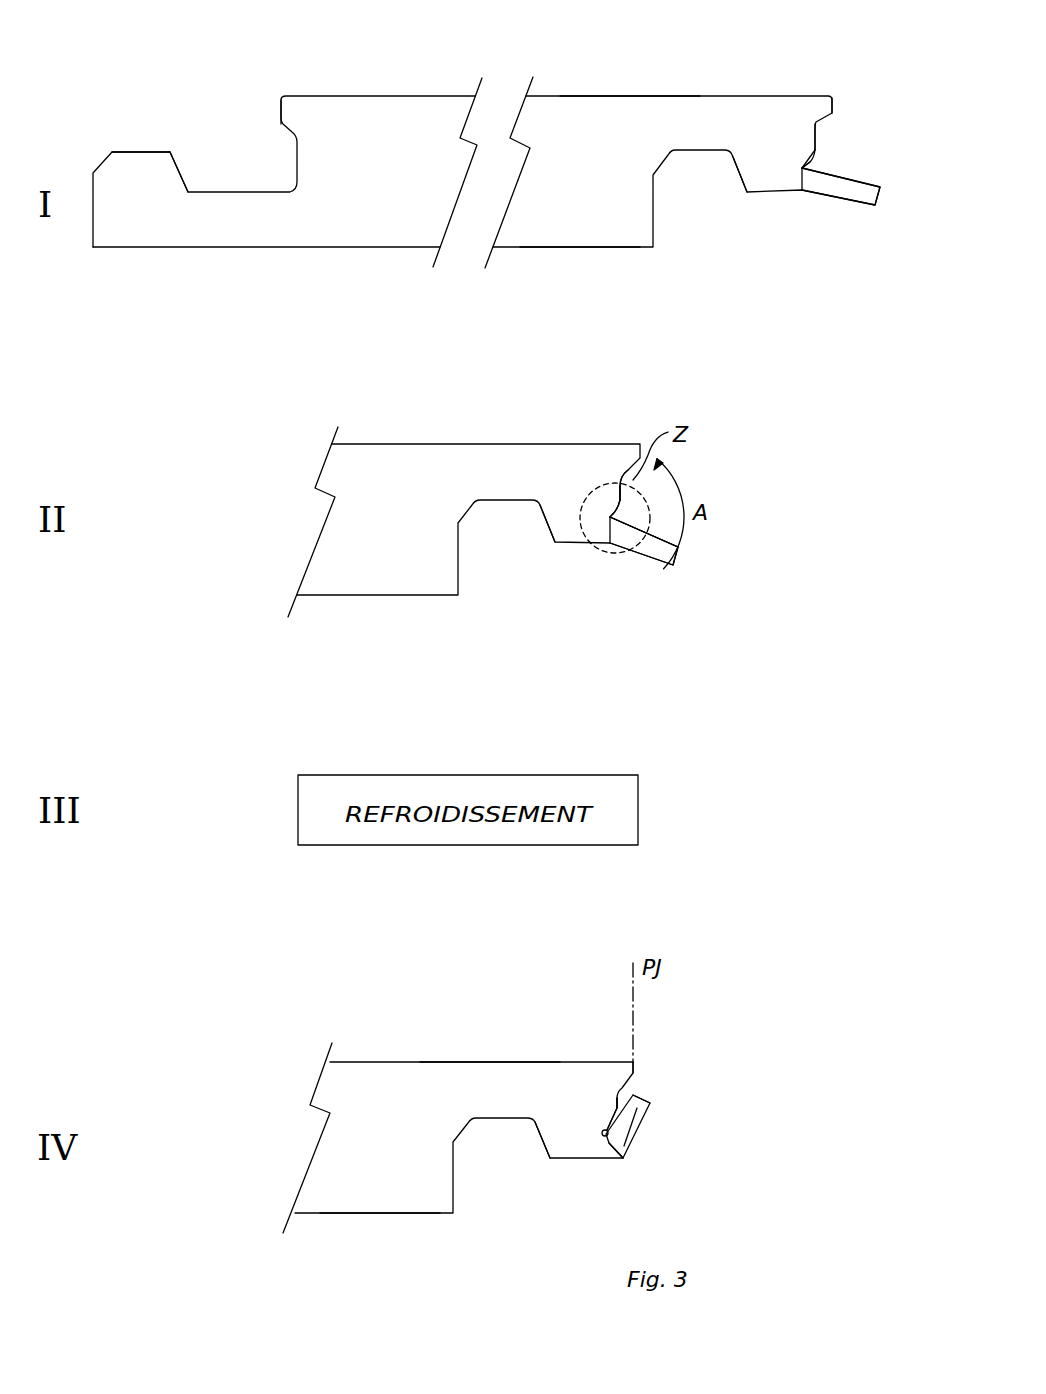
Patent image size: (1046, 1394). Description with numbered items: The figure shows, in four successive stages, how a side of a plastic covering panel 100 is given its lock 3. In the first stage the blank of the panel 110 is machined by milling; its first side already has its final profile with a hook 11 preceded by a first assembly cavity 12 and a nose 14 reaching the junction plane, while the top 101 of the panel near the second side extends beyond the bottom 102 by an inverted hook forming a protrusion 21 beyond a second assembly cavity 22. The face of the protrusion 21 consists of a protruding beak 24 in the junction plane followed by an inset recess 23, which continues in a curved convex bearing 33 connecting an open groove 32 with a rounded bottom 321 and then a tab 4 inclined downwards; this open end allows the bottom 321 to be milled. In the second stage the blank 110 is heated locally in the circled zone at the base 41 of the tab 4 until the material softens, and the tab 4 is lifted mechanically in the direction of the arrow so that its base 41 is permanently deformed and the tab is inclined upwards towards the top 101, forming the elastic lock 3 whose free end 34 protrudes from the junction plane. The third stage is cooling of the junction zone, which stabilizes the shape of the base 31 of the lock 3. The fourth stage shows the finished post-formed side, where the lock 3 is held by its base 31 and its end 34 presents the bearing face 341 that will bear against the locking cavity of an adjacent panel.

The blank of the panel 110 is at (382, 78).
The covering panel 100 is at (387, 1061).
The top of the panel 101 is at (603, 95).
The bottom of the panel 102 is at (575, 248).
The hook 11 is at (151, 214).
The first assembly cavity 12 is at (253, 171).
The nose 14 is at (280, 117).
The protrusion 21 is at (791, 171).
The second assembly cavity 22 is at (713, 213).
The recess 23 is at (817, 136).
The protruding beak 24 is at (832, 95).
The groove 32 is at (806, 167).
The curved convex bearing 33 is at (614, 510).
The rounded bottom of the groove 321 is at (620, 517).
The base of the tab 41 is at (803, 193).
The tab 4 is at (865, 194).
The lock 3 is at (737, 1092).
The free end of the lock 34 is at (639, 1109).
The bearing face 341 is at (646, 1098).
The base of the lock 31 is at (608, 1138).